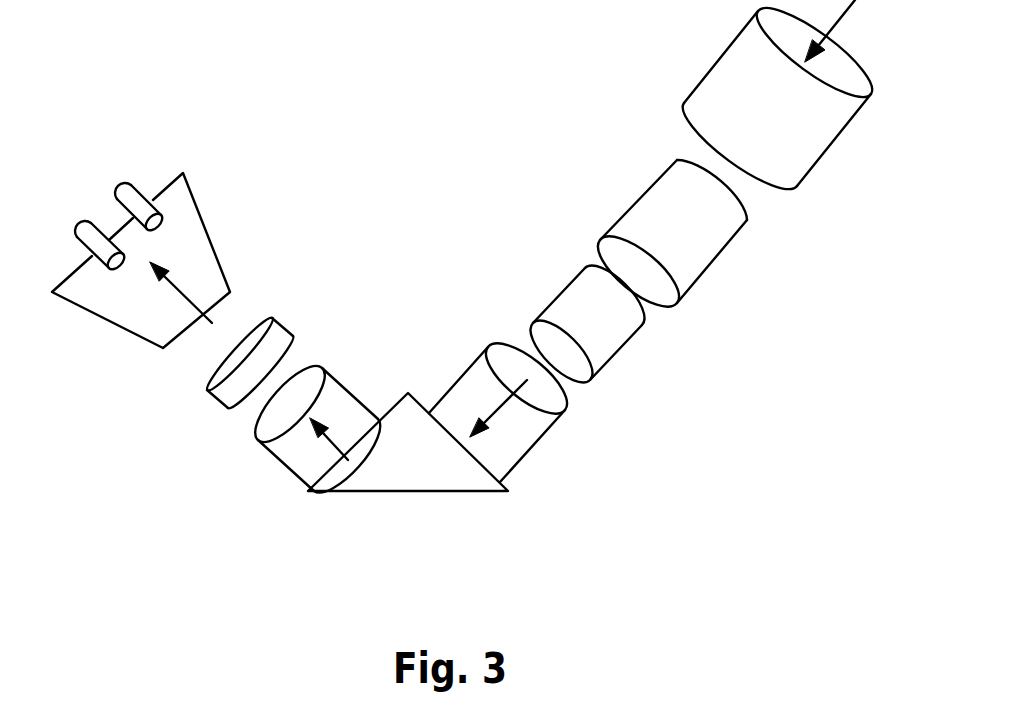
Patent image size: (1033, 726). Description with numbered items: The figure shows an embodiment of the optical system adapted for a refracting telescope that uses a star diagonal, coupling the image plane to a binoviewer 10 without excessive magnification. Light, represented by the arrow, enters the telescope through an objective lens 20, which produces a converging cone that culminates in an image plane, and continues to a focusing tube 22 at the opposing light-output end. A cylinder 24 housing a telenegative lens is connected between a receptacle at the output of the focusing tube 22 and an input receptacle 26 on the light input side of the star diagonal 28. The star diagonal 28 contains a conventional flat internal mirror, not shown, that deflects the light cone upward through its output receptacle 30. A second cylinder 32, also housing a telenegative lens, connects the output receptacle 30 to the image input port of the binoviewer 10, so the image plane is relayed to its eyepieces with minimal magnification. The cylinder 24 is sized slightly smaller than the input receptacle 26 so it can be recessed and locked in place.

The binoviewer 10 is at (123, 344).
The objective lens 20 is at (813, 167).
The focusing tube 22 is at (695, 285).
The cylinder 24 is at (610, 357).
The input receptacle 26 is at (528, 452).
The star diagonal 28 is at (408, 492).
The output receptacle 30 is at (288, 465).
The cylinder 32 is at (217, 398).